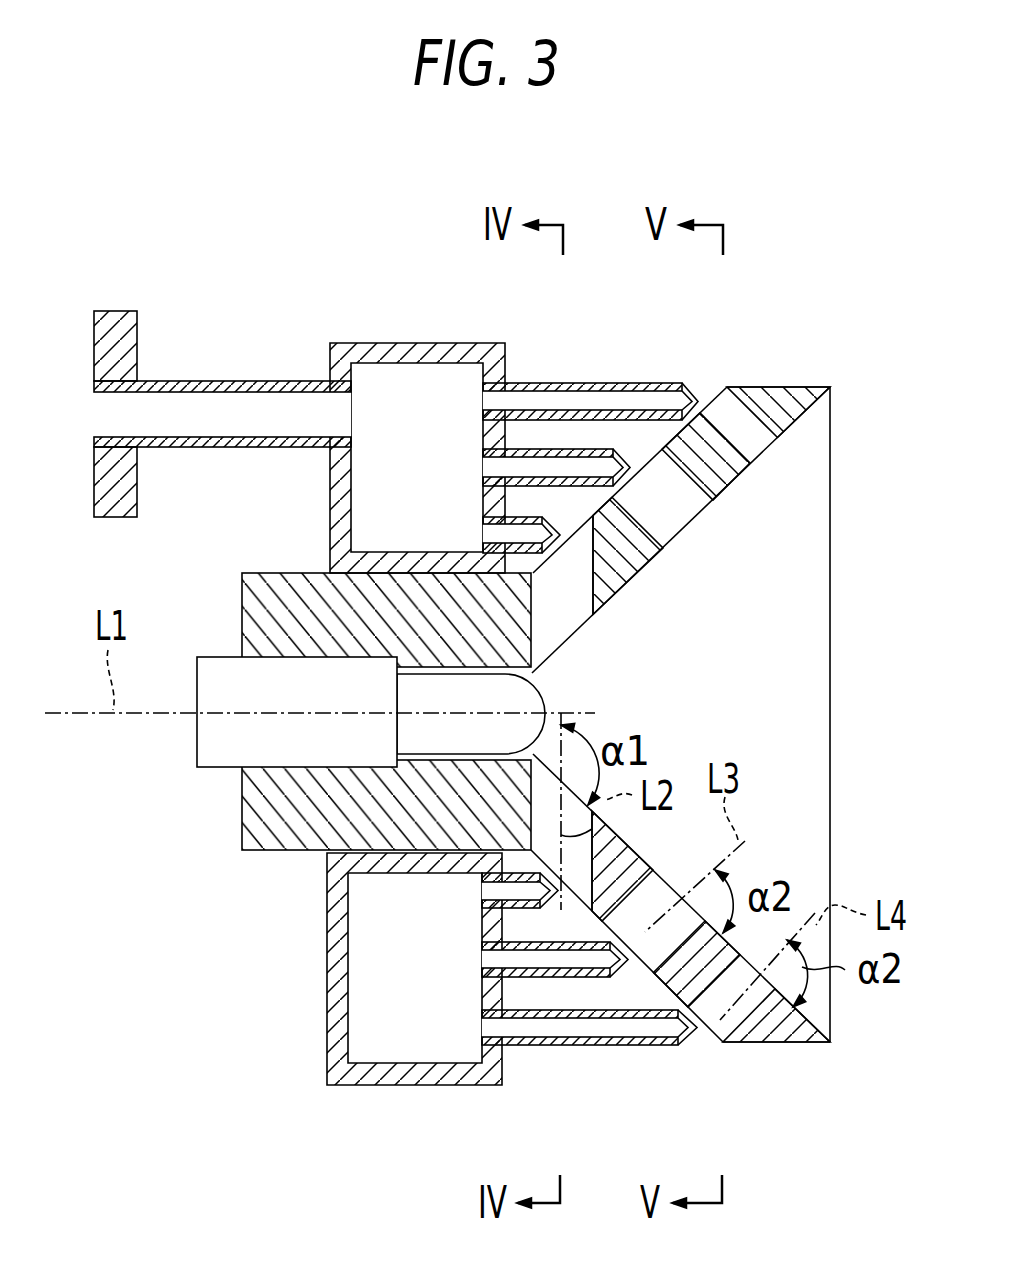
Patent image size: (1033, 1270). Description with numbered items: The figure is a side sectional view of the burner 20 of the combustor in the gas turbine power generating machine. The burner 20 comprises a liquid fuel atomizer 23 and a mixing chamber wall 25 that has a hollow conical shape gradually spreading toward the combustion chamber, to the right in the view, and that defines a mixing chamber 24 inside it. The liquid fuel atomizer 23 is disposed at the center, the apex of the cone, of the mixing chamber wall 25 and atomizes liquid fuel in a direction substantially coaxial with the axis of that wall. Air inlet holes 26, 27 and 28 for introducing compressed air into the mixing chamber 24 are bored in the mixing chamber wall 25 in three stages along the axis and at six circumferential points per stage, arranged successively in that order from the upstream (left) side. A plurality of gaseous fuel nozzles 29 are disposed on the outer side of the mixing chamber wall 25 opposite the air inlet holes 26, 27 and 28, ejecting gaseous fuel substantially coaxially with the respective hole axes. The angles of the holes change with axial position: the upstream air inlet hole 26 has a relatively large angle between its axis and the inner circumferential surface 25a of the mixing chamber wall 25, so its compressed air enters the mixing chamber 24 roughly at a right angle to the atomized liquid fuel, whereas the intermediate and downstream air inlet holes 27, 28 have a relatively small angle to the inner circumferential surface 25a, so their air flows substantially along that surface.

The burner 20 is at (418, 316).
The liquid fuel atomizer 23 is at (197, 748).
The mixing chamber 24 is at (768, 716).
The mixing chamber wall 25 is at (781, 386).
The inner circumferential surface 25a is at (812, 1030).
The air inlet hole 26 is at (558, 618).
The air inlet hole 27 is at (678, 517).
The air inlet hole 28 is at (738, 452).
The gaseous fuel nozzles 29 is at (520, 515).